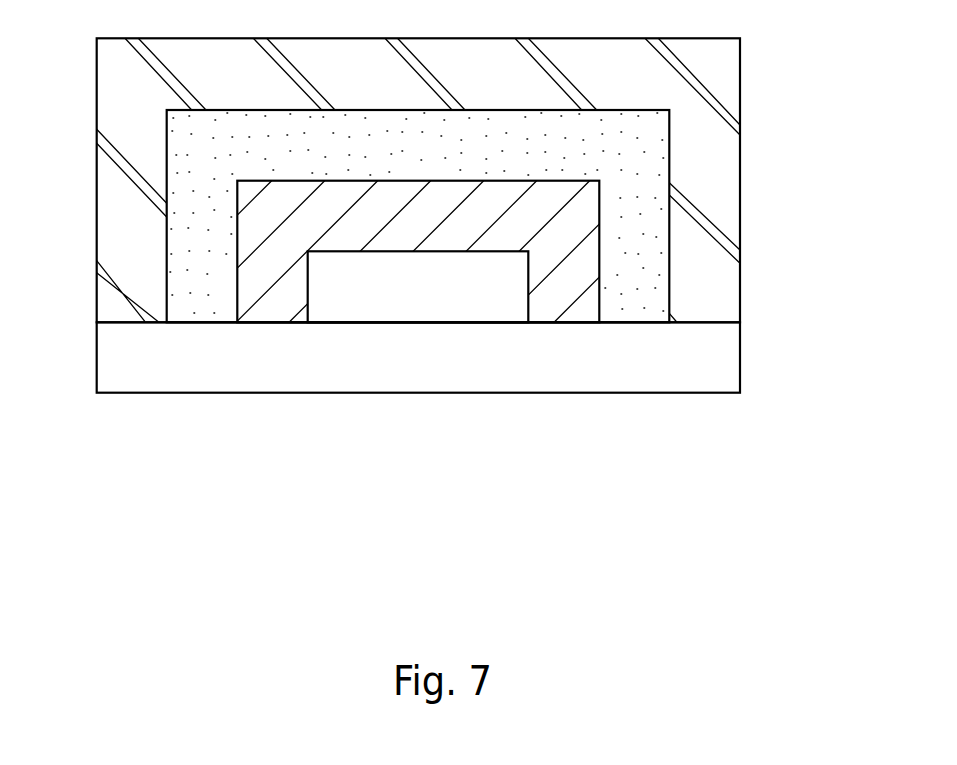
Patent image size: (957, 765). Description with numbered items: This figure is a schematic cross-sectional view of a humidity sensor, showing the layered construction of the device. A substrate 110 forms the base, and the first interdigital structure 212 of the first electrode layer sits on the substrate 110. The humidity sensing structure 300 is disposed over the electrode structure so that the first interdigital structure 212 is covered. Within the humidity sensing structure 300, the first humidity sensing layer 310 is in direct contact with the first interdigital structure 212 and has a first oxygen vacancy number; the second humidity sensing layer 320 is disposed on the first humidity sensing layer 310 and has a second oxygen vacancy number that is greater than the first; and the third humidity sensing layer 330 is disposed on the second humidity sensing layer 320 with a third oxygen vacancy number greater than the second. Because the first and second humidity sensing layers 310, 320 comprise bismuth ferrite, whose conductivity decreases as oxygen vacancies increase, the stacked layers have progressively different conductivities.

The substrate 110 is at (725, 353).
The first interdigital structure 212 is at (515, 292).
The humidity sensing structure 300 is at (521, 180).
The first humidity sensing layer 310 is at (583, 227).
The second humidity sensing layer 320 is at (655, 157).
The third humidity sensing layer 330 is at (725, 74).